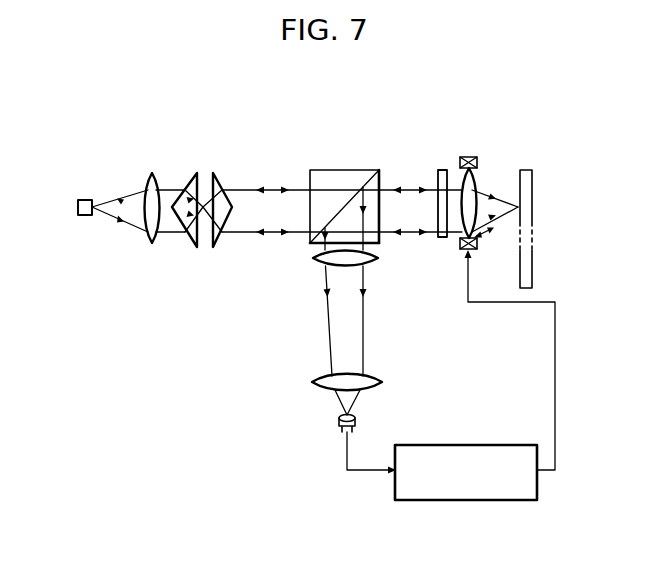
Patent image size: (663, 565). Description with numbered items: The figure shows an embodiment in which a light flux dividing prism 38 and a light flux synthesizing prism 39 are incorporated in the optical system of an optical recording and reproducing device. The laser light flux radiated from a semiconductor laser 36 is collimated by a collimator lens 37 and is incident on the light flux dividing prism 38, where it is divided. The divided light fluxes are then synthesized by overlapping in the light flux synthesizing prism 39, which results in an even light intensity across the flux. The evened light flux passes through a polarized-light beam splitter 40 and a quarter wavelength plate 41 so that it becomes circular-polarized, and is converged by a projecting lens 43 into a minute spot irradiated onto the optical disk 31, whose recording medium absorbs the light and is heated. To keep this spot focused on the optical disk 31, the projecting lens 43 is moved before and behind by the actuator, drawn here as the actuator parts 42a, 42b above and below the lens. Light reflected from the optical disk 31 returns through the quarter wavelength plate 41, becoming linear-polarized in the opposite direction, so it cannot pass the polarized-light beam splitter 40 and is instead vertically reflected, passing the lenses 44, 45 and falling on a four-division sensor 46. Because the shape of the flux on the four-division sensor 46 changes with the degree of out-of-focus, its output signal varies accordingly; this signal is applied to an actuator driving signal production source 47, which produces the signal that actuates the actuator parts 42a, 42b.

The optical disk 31 is at (532, 180).
The semiconductor laser 36 is at (84, 216).
The collimator lens 37 is at (148, 216).
The light flux dividing prism 38 is at (193, 170).
The light flux synthesizing prism 39 is at (217, 170).
The polarized-light beam splitter 40 is at (360, 175).
The ¼ wavelength plate 41 is at (441, 170).
The actuator 42a is at (465, 157).
The actuator 42b is at (461, 250).
The projecting lens 43 is at (473, 177).
The lens 44 is at (313, 262).
The lens 45 is at (312, 385).
The four-division sensor 46 is at (338, 424).
The actuator driving signal production source 47 is at (456, 445).